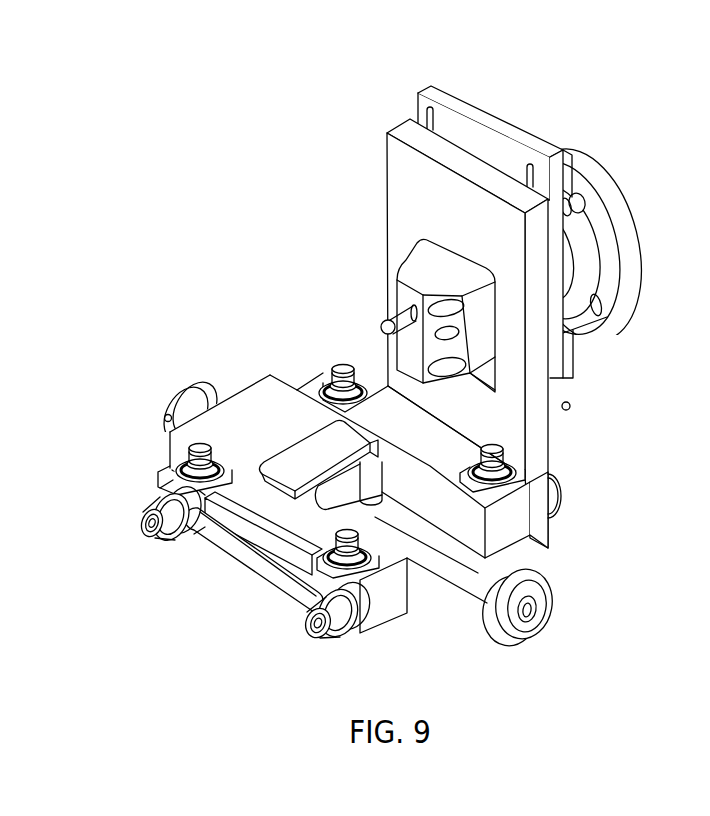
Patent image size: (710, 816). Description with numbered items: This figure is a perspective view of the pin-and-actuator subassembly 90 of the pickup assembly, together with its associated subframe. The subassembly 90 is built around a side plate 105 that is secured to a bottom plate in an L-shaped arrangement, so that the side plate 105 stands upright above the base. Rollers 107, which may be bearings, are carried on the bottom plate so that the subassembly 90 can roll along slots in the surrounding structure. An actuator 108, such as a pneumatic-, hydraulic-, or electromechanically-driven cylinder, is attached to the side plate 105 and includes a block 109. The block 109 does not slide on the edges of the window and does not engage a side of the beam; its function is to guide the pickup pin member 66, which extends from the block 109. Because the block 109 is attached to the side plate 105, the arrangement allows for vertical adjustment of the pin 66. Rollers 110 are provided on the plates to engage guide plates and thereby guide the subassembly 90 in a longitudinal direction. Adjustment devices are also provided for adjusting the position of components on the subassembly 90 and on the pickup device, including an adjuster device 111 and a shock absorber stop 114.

The pin-and-actuator subassembly 90 is at (272, 203).
The side plate 105 is at (428, 91).
The rollers 107 is at (137, 513).
The actuator 108 is at (642, 270).
The block 109 is at (413, 265).
The pickup pin member 66 is at (400, 313).
The rollers 110 is at (333, 378).
The adjuster device 111 is at (482, 620).
The shock absorber stop 114 is at (190, 385).